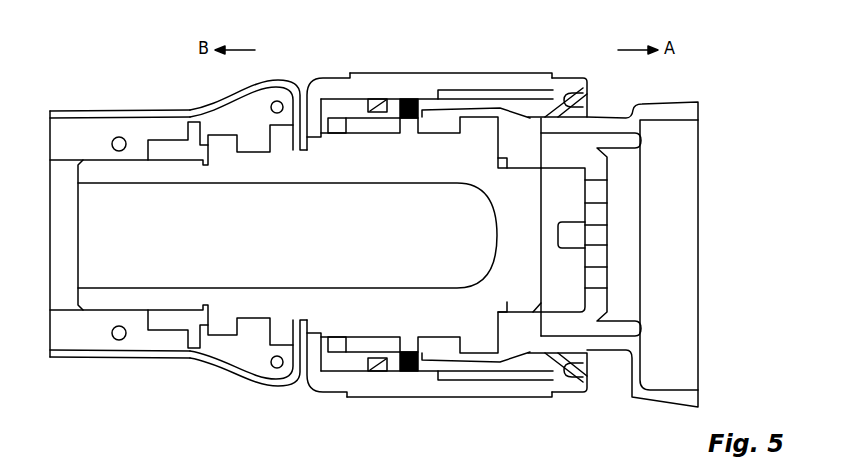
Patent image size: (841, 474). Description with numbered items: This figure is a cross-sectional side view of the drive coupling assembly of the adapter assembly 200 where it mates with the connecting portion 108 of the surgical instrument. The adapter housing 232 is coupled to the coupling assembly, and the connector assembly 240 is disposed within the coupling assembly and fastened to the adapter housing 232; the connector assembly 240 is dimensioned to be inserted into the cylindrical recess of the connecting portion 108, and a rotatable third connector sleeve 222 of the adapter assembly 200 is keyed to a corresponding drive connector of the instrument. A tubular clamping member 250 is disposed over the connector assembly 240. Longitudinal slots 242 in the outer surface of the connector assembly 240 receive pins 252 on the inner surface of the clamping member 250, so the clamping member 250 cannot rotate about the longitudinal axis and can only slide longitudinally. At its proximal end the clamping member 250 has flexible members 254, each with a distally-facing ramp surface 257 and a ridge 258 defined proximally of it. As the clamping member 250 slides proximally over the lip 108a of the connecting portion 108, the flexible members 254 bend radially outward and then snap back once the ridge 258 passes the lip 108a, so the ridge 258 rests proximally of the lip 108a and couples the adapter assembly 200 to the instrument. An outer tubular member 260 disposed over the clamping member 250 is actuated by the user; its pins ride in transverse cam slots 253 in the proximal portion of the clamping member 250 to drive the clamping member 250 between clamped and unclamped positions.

The adapter assembly 200 is at (104, 110).
The adapter housing 232 is at (190, 108).
The connector assembly 240 is at (225, 348).
The longitudinal slots 242 is at (326, 118).
The pins 252 is at (340, 118).
The cam slots 253 is at (377, 106).
The outer tubular member 260 is at (405, 85).
The third connector sleeve 222 is at (372, 72).
The clamping member 250 is at (462, 98).
The flexible members 254 is at (490, 106).
The lip 108a is at (516, 116).
The ridge 258 is at (541, 110).
The ramp surface 257 is at (568, 100).
The connecting portion 108 is at (598, 346).